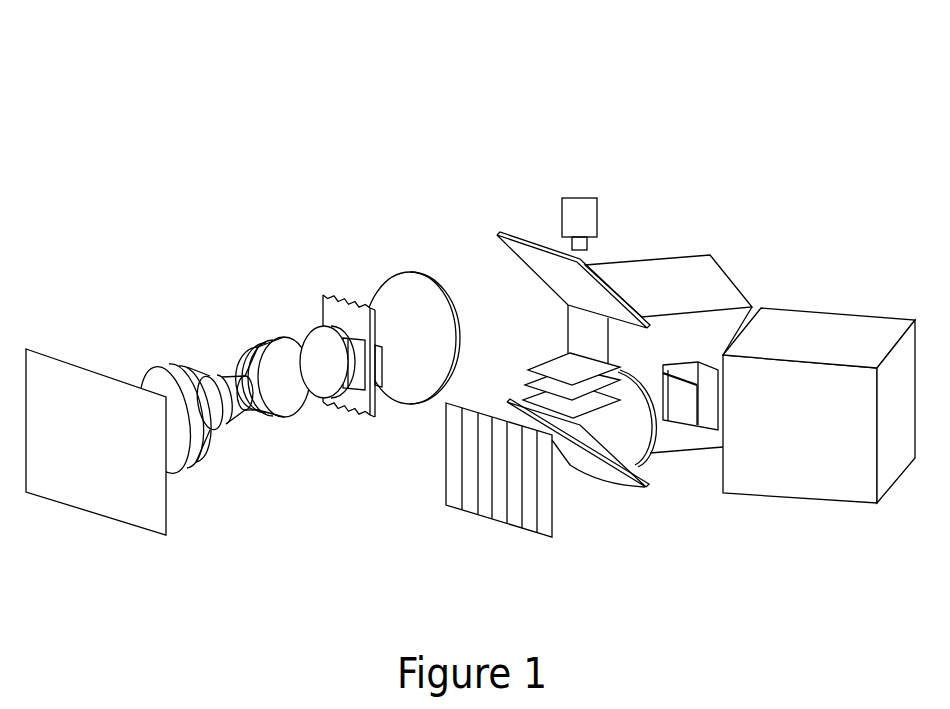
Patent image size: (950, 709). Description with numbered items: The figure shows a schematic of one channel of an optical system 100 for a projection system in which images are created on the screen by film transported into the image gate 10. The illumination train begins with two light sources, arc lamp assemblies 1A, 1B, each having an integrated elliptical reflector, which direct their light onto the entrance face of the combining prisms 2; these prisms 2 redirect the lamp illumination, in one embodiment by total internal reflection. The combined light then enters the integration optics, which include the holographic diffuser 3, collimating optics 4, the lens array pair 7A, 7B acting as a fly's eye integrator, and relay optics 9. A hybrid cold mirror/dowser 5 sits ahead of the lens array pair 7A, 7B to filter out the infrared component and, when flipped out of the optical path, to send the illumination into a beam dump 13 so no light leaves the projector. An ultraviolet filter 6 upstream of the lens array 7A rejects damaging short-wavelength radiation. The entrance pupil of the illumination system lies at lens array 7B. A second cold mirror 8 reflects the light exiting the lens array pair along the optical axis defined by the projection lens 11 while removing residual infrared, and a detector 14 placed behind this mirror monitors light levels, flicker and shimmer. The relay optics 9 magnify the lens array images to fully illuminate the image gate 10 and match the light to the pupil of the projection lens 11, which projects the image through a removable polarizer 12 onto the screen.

The optical system 100 is at (576, 80).
The arc lamp assembly 1A is at (707, 272).
The arc lamp assembly 1B is at (819, 323).
The combining prisms 2 is at (694, 346).
The holographic diffuser 3 is at (678, 415).
The collimating optics 4 is at (643, 465).
The hybrid cold mirror/dowser 5 is at (606, 468).
The ultraviolet filter 6 is at (543, 401).
The lens array 7A is at (550, 366).
The lens array 7B is at (545, 382).
The second cold mirror 8 is at (522, 250).
The relay optics 9 is at (393, 273).
The image gate 10 is at (382, 406).
The projection lens 11 is at (313, 280).
The removable polarizer 12 is at (55, 387).
The beam dump 13 is at (488, 518).
The detector 14 is at (587, 203).